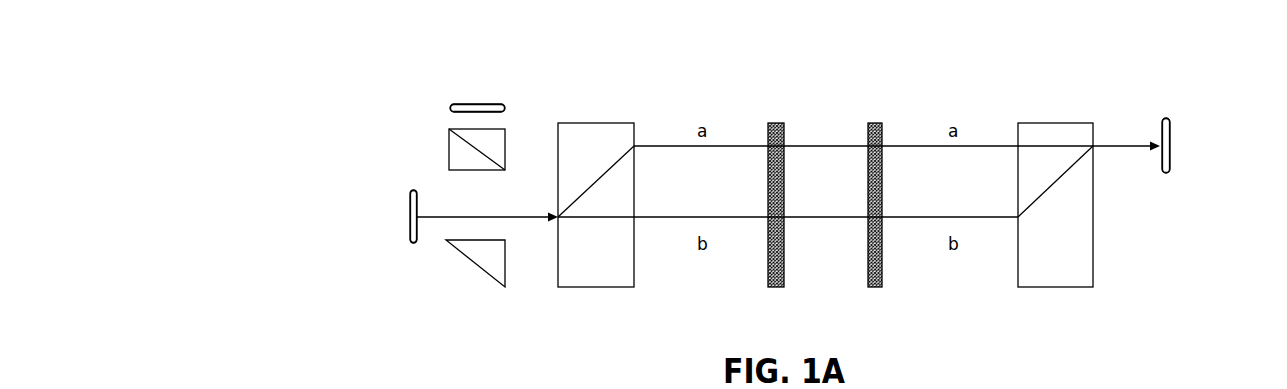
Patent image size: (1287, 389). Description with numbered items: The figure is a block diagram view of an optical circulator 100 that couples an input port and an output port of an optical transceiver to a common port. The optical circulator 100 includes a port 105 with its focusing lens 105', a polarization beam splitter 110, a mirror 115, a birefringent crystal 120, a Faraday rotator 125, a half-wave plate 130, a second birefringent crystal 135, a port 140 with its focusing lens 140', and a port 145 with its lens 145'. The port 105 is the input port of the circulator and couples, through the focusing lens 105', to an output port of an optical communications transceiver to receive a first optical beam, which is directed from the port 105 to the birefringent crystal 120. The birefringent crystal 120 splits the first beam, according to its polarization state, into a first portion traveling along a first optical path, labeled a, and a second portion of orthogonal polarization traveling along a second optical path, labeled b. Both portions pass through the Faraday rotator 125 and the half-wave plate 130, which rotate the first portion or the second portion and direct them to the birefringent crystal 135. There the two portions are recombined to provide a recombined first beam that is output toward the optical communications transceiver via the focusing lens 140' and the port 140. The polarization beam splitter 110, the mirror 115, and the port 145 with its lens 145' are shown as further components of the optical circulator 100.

The optical circulator 100 is at (377, 47).
The port 105 is at (395, 217).
The lens 105' is at (362, 239).
The polarization beam splitter 110 is at (448, 150).
The mirror 115 is at (475, 262).
The birefringent crystal 120 is at (598, 287).
The Faraday rotator 125 is at (776, 287).
The half-wave plate 130 is at (874, 287).
The birefringent crystal 135 is at (1060, 287).
The port 140 is at (1188, 153).
The lens 140' is at (1209, 186).
The port 145 is at (497, 98).
The lens 145' is at (420, 110).